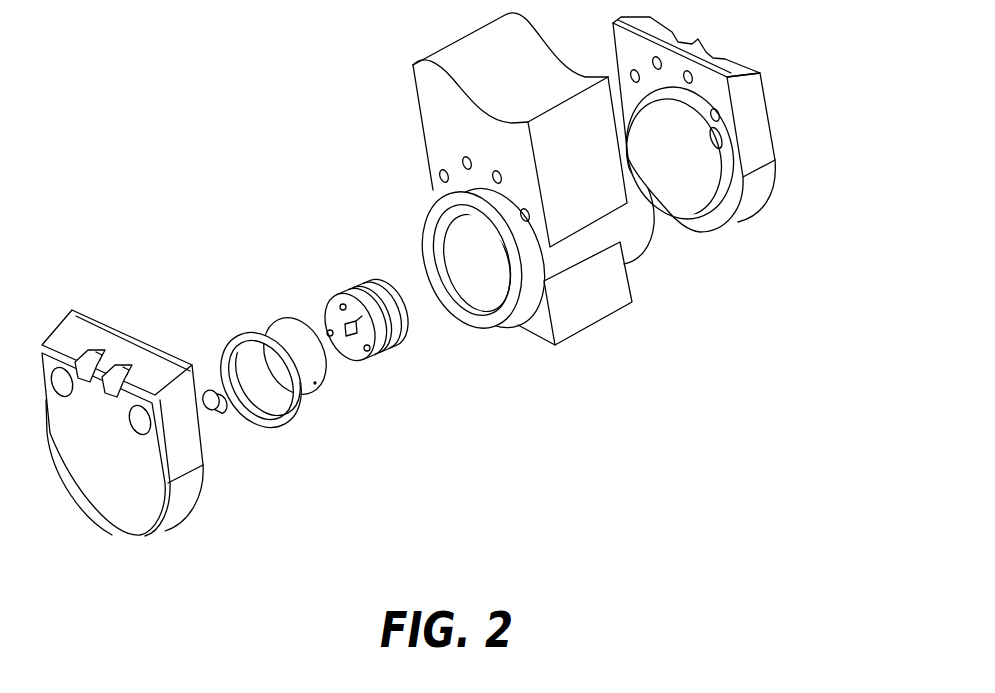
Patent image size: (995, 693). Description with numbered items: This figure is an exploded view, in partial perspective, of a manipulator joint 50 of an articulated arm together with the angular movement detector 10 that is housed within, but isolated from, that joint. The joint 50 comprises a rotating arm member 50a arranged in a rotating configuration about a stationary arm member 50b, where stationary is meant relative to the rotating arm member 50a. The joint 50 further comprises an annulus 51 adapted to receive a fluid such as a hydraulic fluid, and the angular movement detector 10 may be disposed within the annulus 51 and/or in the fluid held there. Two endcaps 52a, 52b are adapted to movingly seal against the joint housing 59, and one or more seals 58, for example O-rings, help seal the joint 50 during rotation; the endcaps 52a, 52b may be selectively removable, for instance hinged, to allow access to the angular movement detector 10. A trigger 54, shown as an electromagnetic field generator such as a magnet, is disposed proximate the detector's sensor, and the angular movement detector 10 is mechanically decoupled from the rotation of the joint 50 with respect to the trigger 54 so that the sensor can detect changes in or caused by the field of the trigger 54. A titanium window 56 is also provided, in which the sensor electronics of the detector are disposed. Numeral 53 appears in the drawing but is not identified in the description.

The angular movement detector 10 is at (335, 275).
The manipulator joint 50 is at (526, 216).
The rotating arm member 50a is at (426, 91).
The stationary arm member 50b is at (615, 282).
The annulus 51 is at (483, 277).
The endcap 52a is at (731, 145).
The endcap 52b is at (182, 517).
The plate opening 53 is at (712, 167).
The trigger 54 is at (224, 411).
The titanium window 56 is at (238, 332).
The seal 58 is at (316, 393).
The joint housing 59 is at (539, 278).